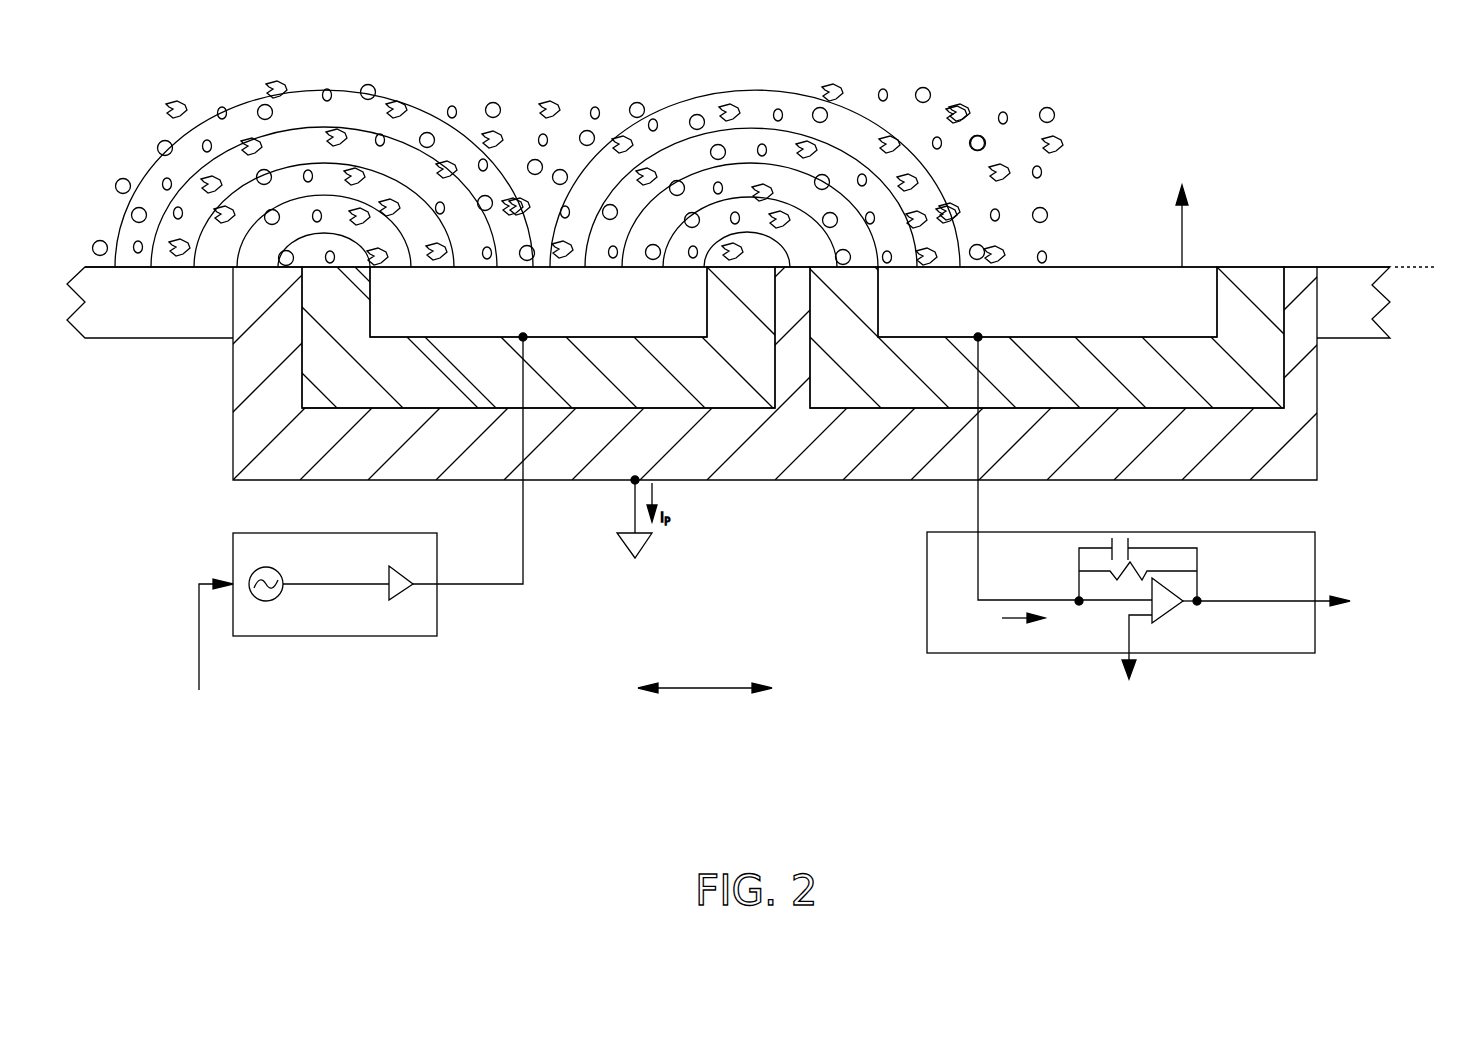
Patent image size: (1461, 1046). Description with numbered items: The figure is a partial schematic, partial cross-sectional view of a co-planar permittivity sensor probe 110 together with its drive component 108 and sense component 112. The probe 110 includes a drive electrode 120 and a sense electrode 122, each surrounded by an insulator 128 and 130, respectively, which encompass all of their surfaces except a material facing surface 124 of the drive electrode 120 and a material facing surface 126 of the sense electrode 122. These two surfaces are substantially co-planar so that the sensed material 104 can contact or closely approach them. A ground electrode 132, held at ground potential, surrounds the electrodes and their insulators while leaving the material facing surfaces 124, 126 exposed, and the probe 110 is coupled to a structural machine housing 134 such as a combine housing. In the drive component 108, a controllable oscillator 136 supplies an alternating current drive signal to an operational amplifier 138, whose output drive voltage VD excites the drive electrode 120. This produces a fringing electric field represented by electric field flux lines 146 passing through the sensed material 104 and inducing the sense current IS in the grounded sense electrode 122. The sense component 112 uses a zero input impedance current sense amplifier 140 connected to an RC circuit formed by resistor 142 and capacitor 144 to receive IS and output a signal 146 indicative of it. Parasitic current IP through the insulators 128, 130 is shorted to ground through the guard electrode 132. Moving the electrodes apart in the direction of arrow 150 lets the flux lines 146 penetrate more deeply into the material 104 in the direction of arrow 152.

The sensed material 104 is at (978, 81).
The drive component 108 is at (333, 637).
The co-planar permittivity sensor probe 110 is at (789, 528).
The sense component 112 is at (960, 653).
The drive electrode 120 is at (607, 318).
The sense electrode 122 is at (910, 318).
The material facing surface 124 is at (543, 267).
The material facing surface 126 is at (1060, 267).
The insulator 128 is at (647, 382).
The insulator 130 is at (942, 382).
The ground electrode 132 is at (1318, 438).
The structural machine housing 134 is at (1337, 267).
The controllable oscillator 136 is at (267, 567).
The operational amplifier 138 is at (410, 587).
The zero input impedance current sense amplifier 140 is at (1170, 610).
The resistor 142 is at (1157, 568).
The capacitor 144 is at (1133, 548).
The electric field flux lines 146 is at (1267, 602).
The arrow 150 is at (697, 689).
The arrow 152 is at (1185, 237).